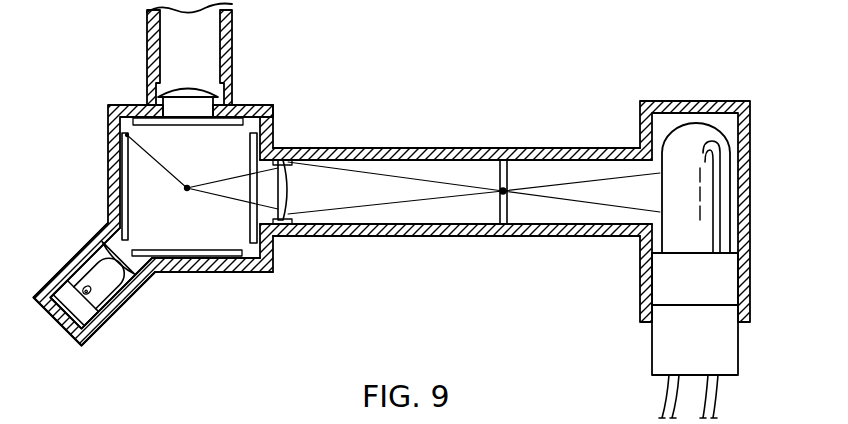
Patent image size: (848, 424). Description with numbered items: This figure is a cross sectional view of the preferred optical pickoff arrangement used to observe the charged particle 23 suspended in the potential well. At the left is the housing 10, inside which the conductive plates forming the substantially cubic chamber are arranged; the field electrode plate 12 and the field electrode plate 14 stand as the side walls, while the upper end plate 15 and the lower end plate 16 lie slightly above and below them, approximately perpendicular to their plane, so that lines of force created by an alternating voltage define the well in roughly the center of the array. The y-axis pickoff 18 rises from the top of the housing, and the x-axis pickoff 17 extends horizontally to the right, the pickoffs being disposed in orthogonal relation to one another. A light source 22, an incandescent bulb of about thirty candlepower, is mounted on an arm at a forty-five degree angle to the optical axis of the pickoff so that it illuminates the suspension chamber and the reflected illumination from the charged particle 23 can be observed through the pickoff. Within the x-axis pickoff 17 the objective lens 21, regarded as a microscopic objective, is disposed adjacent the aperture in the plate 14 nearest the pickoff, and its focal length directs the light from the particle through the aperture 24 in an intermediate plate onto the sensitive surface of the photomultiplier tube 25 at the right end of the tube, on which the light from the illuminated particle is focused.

The housing 10 is at (107, 160).
The field electrode plate 12 is at (120, 196).
The field electrode plate 14 is at (258, 236).
The upper end plate 15 is at (242, 110).
The lower end plate 16 is at (220, 272).
The x-axis pickoff 17 is at (380, 147).
The y-axis pickoff 18 is at (147, 50).
The lens 21 is at (291, 178).
The light source 22 is at (113, 313).
The charged particle 23 is at (125, 133).
The aperture 24 is at (498, 200).
The photomultiplier tube 25 is at (690, 123).